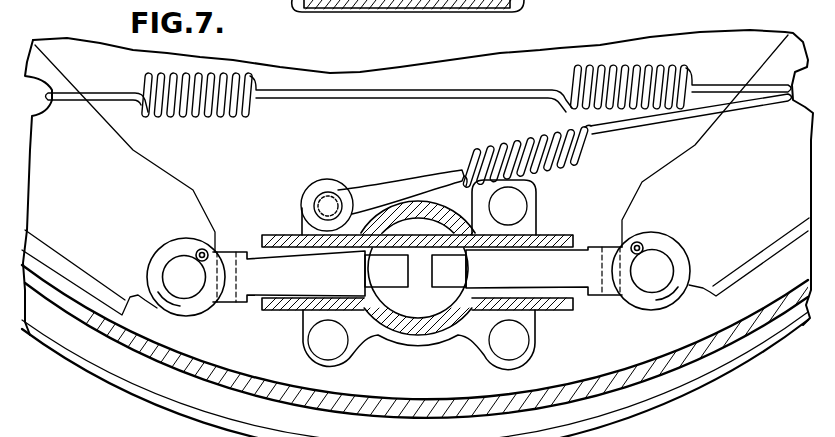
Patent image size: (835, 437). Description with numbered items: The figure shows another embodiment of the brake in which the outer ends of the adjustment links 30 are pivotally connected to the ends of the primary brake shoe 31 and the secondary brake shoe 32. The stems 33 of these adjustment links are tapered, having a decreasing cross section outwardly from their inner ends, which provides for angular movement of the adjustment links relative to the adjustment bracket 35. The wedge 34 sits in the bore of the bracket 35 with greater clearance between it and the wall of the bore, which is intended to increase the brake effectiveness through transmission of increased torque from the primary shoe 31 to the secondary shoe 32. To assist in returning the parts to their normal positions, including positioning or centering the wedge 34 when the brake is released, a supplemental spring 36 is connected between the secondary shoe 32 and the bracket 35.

The adjustment links 30 is at (543, 270).
The primary brake shoe 31 is at (125, 183).
The secondary brake shoe 32 is at (717, 165).
The stems 33 is at (304, 281).
The wedge 34 is at (423, 307).
The bracket 35 is at (387, 312).
The supplemental spring 36 is at (477, 167).